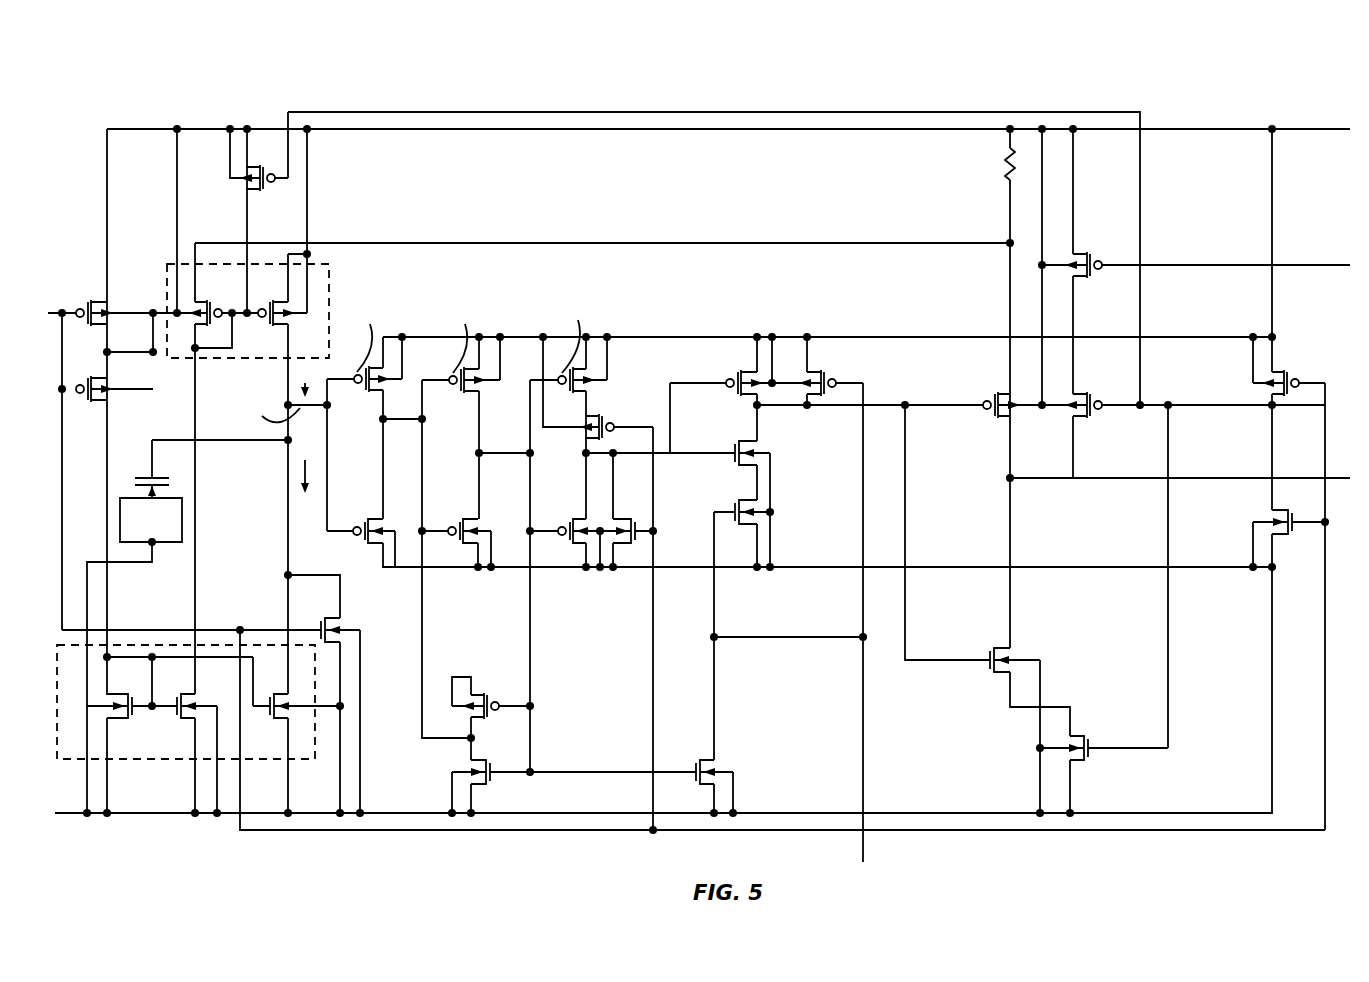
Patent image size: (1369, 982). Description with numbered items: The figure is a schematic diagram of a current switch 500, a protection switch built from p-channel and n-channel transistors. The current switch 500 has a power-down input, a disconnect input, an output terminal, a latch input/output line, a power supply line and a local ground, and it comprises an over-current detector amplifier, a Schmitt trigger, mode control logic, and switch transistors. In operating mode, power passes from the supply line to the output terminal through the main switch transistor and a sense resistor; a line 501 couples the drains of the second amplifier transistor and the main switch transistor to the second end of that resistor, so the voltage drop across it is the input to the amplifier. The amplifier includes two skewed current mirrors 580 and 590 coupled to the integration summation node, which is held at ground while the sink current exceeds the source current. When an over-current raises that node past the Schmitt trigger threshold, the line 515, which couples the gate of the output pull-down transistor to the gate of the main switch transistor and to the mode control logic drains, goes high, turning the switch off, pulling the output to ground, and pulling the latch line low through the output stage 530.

The current switch 500 is at (694, 468).
The line 501 is at (800, 243).
The line 515 is at (942, 407).
The output latch stage line 530 is at (1167, 831).
The skewed current mirror 580 is at (327, 264).
The skewed current mirror 590 is at (298, 760).